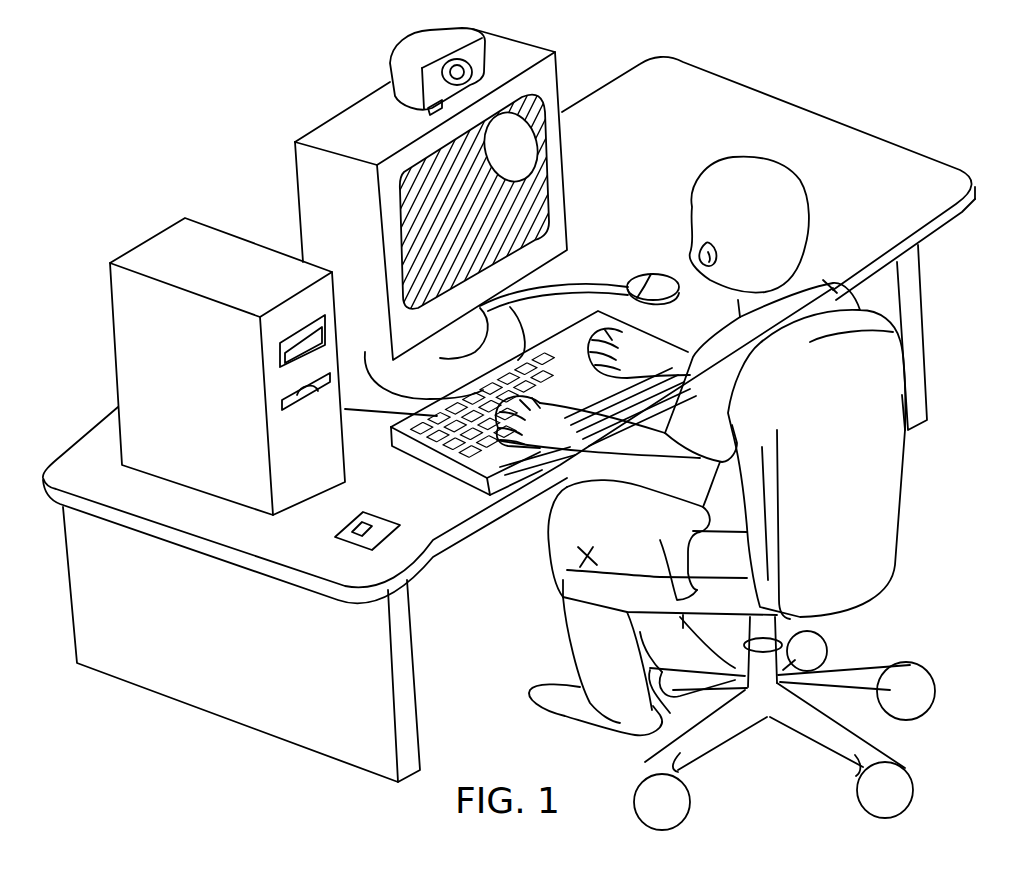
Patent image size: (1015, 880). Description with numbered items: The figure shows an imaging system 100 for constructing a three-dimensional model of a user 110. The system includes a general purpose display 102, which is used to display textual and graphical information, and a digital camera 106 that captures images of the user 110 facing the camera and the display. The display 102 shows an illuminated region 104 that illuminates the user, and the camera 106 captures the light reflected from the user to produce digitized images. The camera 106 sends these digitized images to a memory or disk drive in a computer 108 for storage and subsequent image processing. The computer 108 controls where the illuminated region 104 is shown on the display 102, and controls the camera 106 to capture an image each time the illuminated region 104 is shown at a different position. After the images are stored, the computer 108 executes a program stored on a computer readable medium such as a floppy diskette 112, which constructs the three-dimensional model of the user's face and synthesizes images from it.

The imaging system 100 is at (298, 102).
The general purpose display 102 is at (540, 72).
The illuminated region 104 is at (518, 147).
The digital camera 106 is at (412, 53).
The computer 108 is at (115, 328).
The user 110 is at (803, 196).
The floppy diskette 112 is at (342, 547).